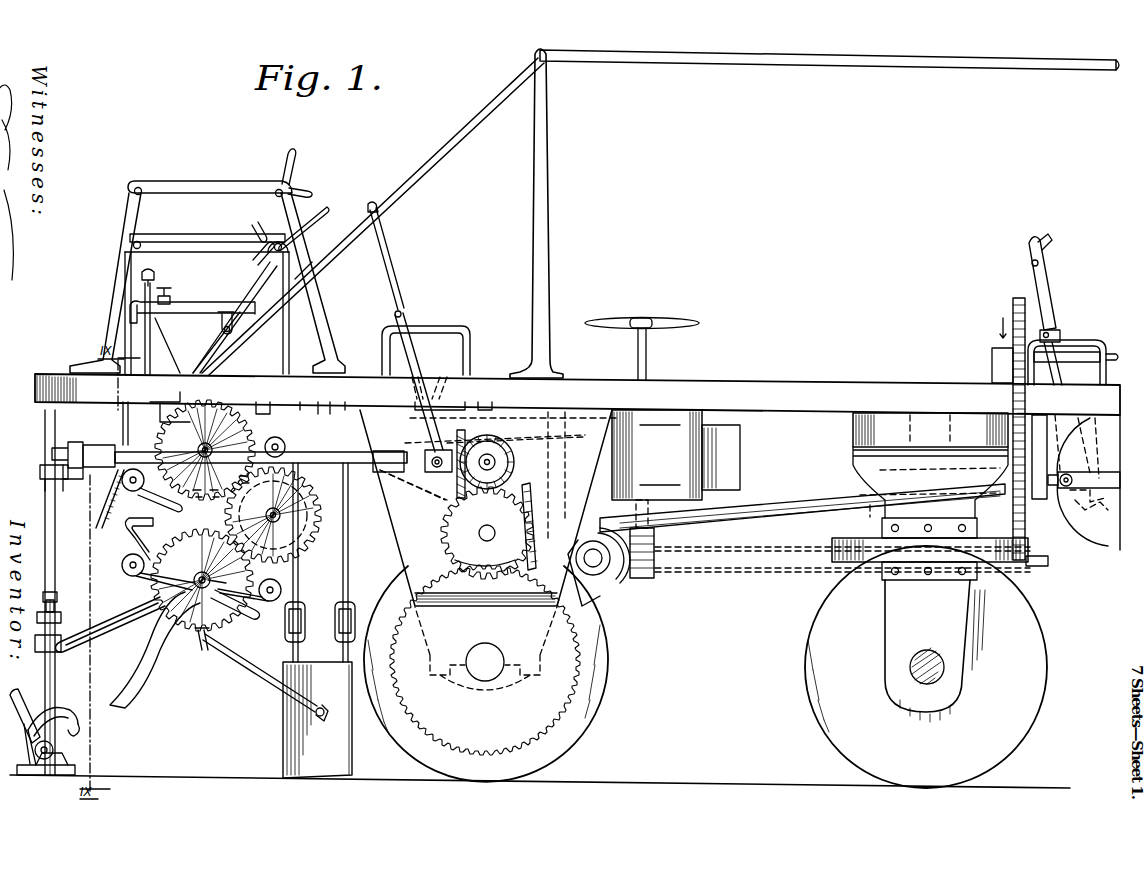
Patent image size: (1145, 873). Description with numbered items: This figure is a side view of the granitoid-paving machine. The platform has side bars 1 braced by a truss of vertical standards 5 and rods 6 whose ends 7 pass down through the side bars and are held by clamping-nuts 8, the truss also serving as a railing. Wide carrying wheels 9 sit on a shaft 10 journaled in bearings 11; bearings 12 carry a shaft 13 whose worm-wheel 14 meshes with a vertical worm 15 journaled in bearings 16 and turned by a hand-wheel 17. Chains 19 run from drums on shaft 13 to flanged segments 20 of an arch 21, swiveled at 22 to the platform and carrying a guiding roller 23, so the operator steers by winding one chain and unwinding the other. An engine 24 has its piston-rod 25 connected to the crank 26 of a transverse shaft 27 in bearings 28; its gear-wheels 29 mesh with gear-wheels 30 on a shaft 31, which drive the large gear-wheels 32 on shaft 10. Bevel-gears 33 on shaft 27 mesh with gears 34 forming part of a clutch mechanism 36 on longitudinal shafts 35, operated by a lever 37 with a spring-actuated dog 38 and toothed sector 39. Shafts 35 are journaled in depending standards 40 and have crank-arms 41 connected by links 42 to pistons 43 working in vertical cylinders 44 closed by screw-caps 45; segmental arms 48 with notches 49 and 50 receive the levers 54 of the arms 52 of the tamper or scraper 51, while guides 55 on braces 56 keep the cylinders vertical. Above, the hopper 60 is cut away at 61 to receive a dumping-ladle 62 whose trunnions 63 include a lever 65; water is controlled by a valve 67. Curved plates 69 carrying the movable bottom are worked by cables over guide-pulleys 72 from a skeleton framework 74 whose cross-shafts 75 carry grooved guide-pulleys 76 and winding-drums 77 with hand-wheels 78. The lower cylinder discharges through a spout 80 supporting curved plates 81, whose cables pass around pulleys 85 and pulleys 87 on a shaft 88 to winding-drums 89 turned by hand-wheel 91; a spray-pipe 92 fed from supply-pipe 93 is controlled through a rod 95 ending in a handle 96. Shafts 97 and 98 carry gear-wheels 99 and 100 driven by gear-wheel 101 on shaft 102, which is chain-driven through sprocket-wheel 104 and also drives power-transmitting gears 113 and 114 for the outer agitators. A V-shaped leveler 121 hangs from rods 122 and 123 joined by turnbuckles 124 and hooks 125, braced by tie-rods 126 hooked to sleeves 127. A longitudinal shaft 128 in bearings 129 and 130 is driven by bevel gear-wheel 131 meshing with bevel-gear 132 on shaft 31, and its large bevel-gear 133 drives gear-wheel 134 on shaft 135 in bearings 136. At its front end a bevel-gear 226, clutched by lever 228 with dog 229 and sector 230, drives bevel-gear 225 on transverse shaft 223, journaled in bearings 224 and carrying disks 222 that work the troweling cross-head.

The side bars 1 is at (775, 405).
The vertical standards 5 is at (551, 210).
The rods 6 is at (848, 66).
The ends of rods 7 is at (420, 162).
The clamping-nuts 8 is at (170, 410).
The carrying wheels or rollers 9 is at (500, 704).
The shaft 10 is at (485, 662).
The bearings 11 is at (497, 692).
The bearings 12 is at (600, 606).
The shaft 13 is at (612, 590).
The worm-wheel 14 is at (640, 580).
The vertical worm 15 is at (650, 575).
The bearings 16 is at (650, 504).
The hand-wheel 17 is at (650, 320).
The chains 19 is at (737, 548).
The flanged segments 20 is at (830, 550).
The arch 21 is at (930, 584).
The swivel 22 is at (930, 430).
The roller 23 is at (926, 667).
The engine 24 is at (676, 455).
The piston-rod 25 is at (558, 462).
The crank 26 is at (500, 410).
The transverse shaft 27 is at (487, 462).
The bearings 28 is at (470, 410).
The gear-wheels 29 is at (512, 453).
The gear-wheels 30 is at (446, 526).
The shaft 31 is at (488, 527).
The large gear-wheels 32 is at (468, 752).
The bevel-gears 33 is at (512, 460).
The bevel-gears 34 is at (449, 467).
The longitudinal shafts 35 is at (312, 456).
The clutch mechanism 36 is at (437, 473).
The lever 37 is at (413, 349).
The spring-actuated dog 38 is at (405, 312).
The toothed sector 39 is at (448, 328).
The depending standards 40 is at (228, 460).
The crank-arms 41 is at (70, 484).
The links 42 is at (56, 551).
The reciprocatory pistons 43 is at (58, 604).
The vertical cylinders 44 is at (57, 679).
The screw-caps 45 is at (62, 616).
The segmental arms 48 is at (62, 720).
The notch 49 is at (82, 733).
The notch 50 is at (22, 736).
The tamper or scraper 51 is at (33, 776).
The arms 52 is at (55, 776).
The arms or levers 54 is at (22, 684).
The guides 55 is at (61, 650).
The braces 56 is at (96, 628).
The hopper 60 is at (197, 342).
The cut-away corner 61 is at (270, 318).
The dumping-ladle 62 is at (201, 310).
The trunnions 63 is at (224, 329).
The lever 65 is at (328, 207).
The valve 67 is at (169, 300).
The curved plates 69 is at (180, 504).
The guide-pulleys 72 is at (273, 440).
The superstructure or skeleton framework 74 is at (126, 214).
The cross-shafts 75 is at (134, 190).
The grooved guide-pulleys 76 is at (133, 182).
The winding-drums 77 is at (292, 187).
The hand-wheels 78 is at (286, 163).
The spout 80 is at (123, 706).
The curved plates 81 is at (183, 645).
The pulleys 85 is at (122, 566).
The pulleys 87 is at (128, 237).
The shaft 88 is at (133, 246).
The winding-drums 89 is at (276, 268).
The hand-wheel 91 is at (257, 224).
The spray or jet pipe 92 is at (142, 539).
The supply-pipe 93 is at (122, 432).
The reciprocatory rod 95 is at (152, 350).
The handle 96 is at (150, 271).
The shaft 97 is at (200, 448).
The shaft 98 is at (196, 579).
The gear-wheel 99 is at (245, 410).
The gear-wheel 100 is at (238, 617).
The gear-wheel 101 is at (312, 492).
The shaft 102 is at (300, 528).
The sprocket-wheel 104 is at (281, 516).
The power-transmitting gear 113 is at (221, 483).
The power-transmitting gear 114 is at (230, 573).
The leveler 121 is at (290, 742).
The rods 122 is at (319, 655).
The rods 123 is at (300, 582).
The turnbuckles 124 is at (305, 625).
The hooks 125 is at (322, 413).
The tie-rods 126 is at (258, 676).
The sleeves 127 is at (204, 650).
The longitudinally-extending shaft 128 is at (780, 495).
The bearing 129 is at (487, 472).
The bearing 130 is at (1040, 500).
The bevel gear-wheel 131 is at (531, 585).
The bevel-gear 132 is at (498, 585).
The large bevel-gear 133 is at (1036, 566).
The gear-wheel 134 is at (1012, 306).
The longitudinal shaft 135 is at (1110, 352).
The bearings 136 is at (991, 357).
The disks 222 is at (1078, 530).
The transverse shaft 223 is at (1090, 440).
The bearings 224 is at (1090, 398).
The bevel-gear 225 is at (1104, 512).
The bevel-gear 226 is at (1092, 510).
The lever 228 is at (1038, 240).
The dog 229 is at (1060, 328).
The sector 230 is at (1080, 340).